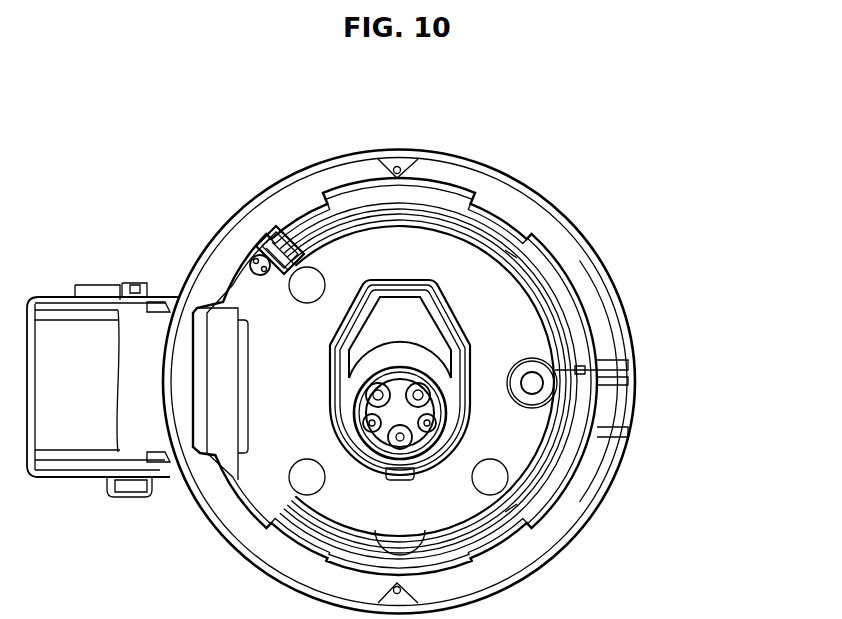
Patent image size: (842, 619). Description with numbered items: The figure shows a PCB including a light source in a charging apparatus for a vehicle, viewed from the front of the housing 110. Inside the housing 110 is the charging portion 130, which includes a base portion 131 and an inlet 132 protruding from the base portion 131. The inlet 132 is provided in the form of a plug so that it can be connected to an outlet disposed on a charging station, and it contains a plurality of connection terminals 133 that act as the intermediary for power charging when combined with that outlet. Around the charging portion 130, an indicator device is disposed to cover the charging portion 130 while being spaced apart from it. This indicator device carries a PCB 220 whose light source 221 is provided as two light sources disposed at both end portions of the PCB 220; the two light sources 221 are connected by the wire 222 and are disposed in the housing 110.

The housing 110 is at (500, 169).
The charging portion 130 is at (527, 381).
The base portion 131 is at (518, 322).
The inlet 132 is at (448, 403).
The connection terminals 133 is at (447, 425).
The PCB 220 is at (260, 242).
The light source 221 is at (274, 230).
The wire 222 is at (354, 207).